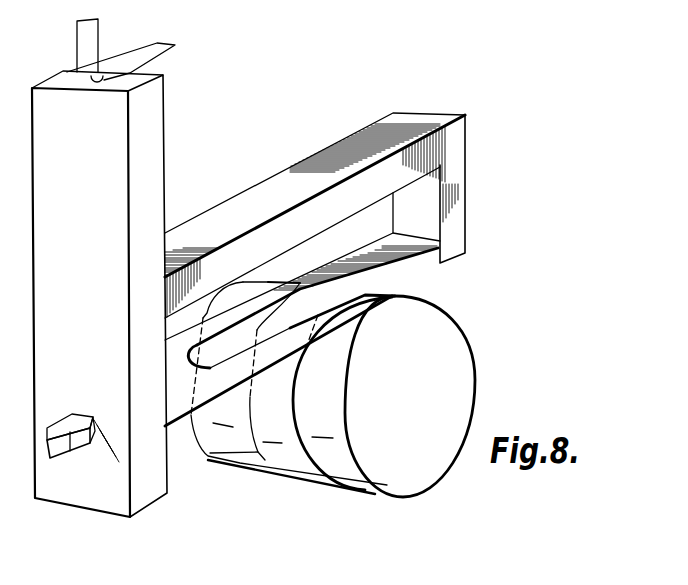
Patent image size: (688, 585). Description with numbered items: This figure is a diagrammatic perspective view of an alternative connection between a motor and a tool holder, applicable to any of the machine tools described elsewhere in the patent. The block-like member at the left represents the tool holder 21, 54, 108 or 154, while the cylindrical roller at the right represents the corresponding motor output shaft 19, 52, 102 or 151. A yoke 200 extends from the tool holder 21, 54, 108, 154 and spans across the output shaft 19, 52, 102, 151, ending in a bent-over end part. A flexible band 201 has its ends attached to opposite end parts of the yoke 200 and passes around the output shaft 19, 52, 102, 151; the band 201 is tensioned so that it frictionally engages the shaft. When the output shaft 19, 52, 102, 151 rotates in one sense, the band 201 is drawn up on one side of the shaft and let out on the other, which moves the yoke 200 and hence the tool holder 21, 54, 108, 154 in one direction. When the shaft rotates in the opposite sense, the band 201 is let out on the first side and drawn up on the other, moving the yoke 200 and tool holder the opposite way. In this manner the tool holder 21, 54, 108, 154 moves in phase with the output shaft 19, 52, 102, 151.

The tool holder 21 is at (197, 268).
The tool holder 54 is at (197, 268).
The tool holder 108 is at (197, 268).
The tool holder 154 is at (114, 162).
The yoke 200 is at (328, 198).
The flexible band 201 is at (395, 260).
The output shaft 19 is at (410, 389).
The output shaft 52 is at (410, 389).
The output shaft 102 is at (410, 389).
The output shaft 151 is at (452, 396).